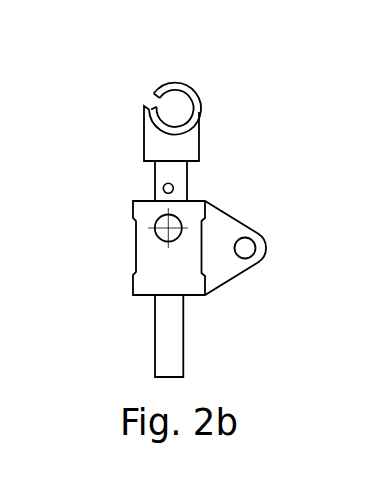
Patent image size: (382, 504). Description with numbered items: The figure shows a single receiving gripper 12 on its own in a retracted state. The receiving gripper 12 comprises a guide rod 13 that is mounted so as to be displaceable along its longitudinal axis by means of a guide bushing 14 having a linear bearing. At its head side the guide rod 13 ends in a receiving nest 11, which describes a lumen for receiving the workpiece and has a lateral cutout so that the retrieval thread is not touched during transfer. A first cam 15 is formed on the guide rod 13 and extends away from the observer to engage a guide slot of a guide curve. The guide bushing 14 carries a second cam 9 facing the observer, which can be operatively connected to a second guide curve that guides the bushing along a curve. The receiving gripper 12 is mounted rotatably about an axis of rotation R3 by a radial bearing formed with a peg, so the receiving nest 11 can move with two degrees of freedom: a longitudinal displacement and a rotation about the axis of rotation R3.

The second cam 9 is at (245, 246).
The receiving nest 11 is at (171, 83).
The receiving gripper 12 is at (291, 84).
The guide rod 13 is at (168, 339).
The guide bushing 14 is at (168, 261).
The first cam 15 is at (161, 188).
The axis of rotation R3 is at (158, 237).